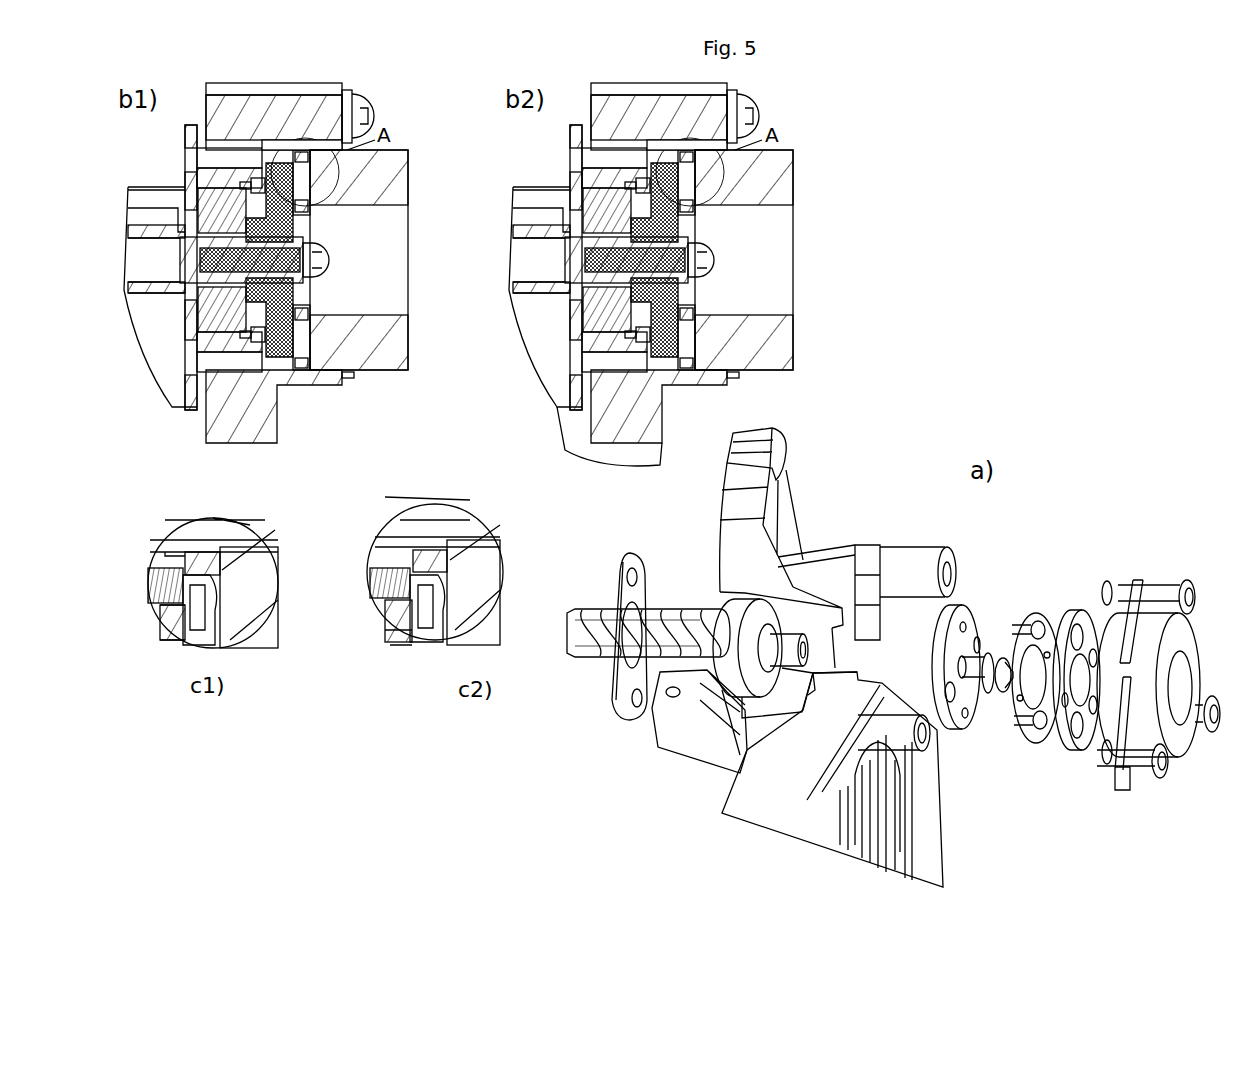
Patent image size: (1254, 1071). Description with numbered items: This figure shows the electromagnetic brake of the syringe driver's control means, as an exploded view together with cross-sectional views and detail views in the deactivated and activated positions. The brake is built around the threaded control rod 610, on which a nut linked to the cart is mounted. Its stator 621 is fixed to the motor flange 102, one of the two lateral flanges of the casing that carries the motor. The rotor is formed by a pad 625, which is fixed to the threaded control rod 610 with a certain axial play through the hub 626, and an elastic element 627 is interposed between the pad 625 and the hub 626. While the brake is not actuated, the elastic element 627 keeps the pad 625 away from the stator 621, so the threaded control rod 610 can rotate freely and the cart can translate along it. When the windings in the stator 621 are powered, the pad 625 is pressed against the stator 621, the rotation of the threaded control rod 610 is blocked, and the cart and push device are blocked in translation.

The motor flange 102 is at (925, 833).
The threaded control rod 610 is at (675, 630).
The stator 621 is at (390, 178).
The pad 625 is at (1073, 620).
The hub 626 is at (968, 627).
The elastic element 627 is at (1035, 622).